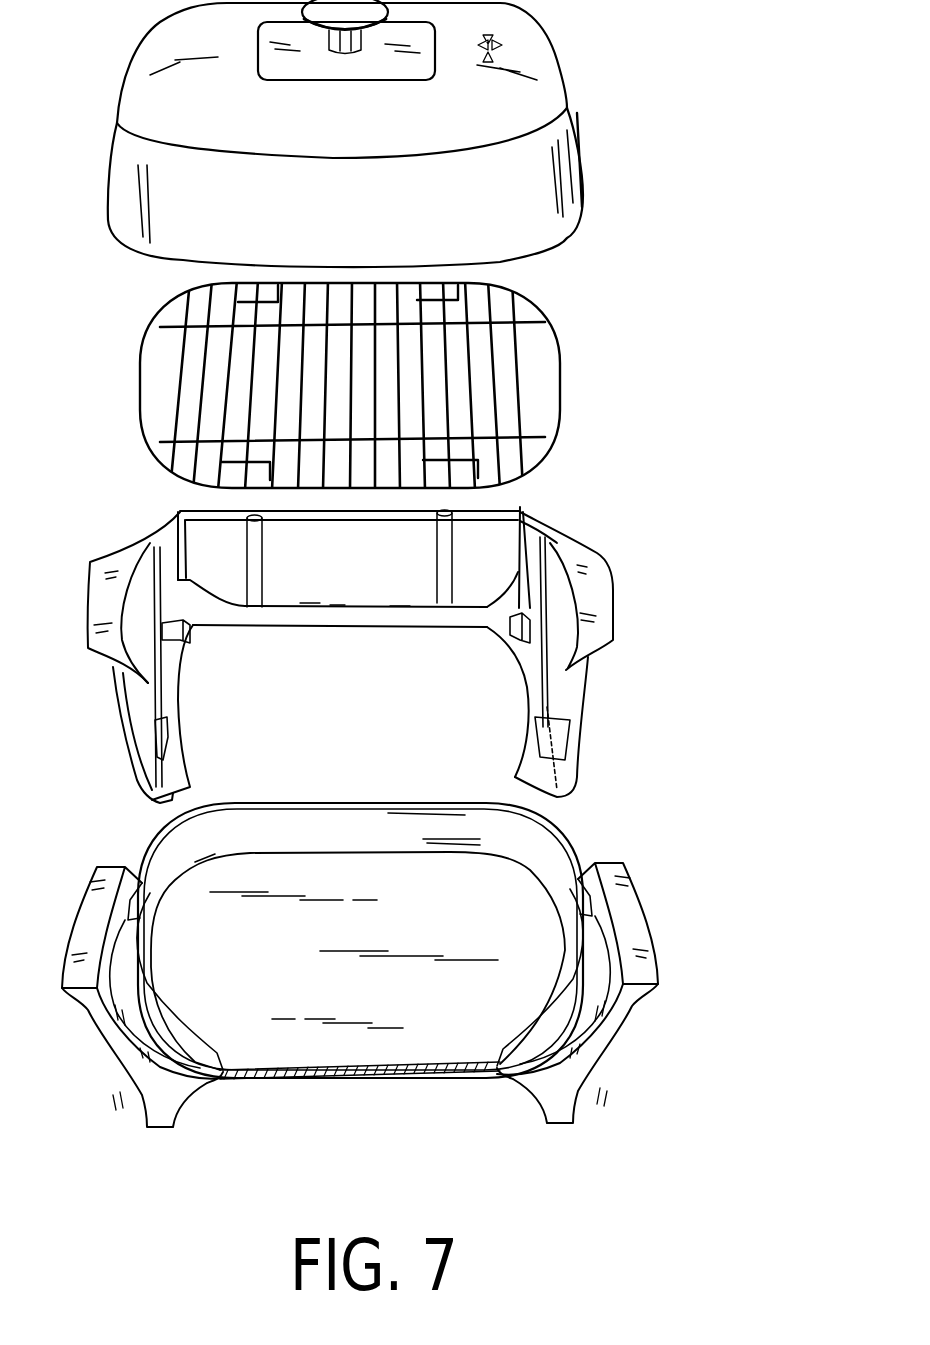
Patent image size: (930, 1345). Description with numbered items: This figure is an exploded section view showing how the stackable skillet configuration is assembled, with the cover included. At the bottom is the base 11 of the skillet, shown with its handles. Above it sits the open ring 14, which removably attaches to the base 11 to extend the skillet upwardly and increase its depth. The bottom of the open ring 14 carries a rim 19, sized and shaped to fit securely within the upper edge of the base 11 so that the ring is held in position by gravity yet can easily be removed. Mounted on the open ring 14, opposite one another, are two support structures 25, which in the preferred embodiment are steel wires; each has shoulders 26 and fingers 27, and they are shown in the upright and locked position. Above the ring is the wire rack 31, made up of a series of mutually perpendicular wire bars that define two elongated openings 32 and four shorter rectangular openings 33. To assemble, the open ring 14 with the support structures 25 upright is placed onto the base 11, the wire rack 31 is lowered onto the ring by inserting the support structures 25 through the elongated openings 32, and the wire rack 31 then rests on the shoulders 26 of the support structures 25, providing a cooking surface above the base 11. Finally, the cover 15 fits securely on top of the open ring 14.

The base 11 is at (363, 1082).
The open ring 14 is at (598, 683).
The cover 15 is at (578, 61).
The rim 19 is at (150, 803).
The support structures 25 is at (162, 569).
The shoulders 26 is at (157, 691).
The fingers 27 is at (178, 511).
The wire rack 31 is at (560, 337).
The elongated openings 32 is at (150, 378).
The shorter rectangular openings 33 is at (257, 293).